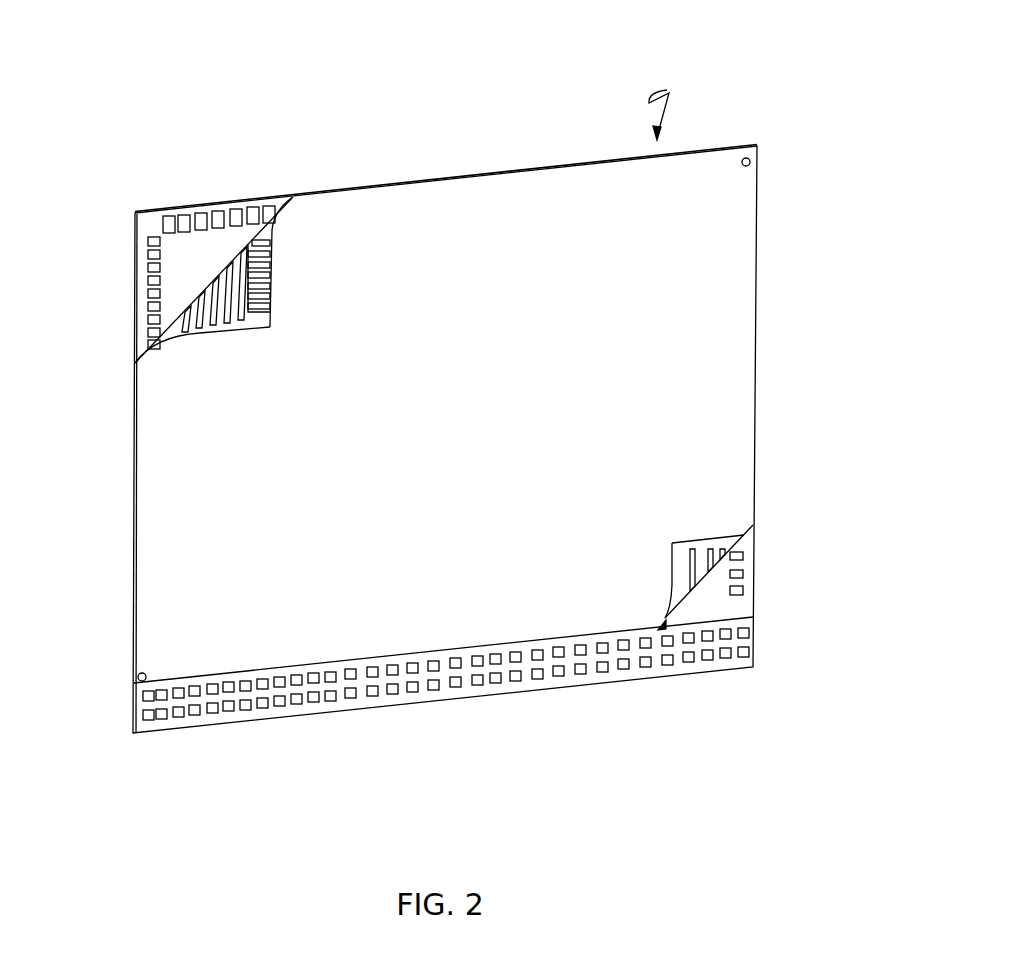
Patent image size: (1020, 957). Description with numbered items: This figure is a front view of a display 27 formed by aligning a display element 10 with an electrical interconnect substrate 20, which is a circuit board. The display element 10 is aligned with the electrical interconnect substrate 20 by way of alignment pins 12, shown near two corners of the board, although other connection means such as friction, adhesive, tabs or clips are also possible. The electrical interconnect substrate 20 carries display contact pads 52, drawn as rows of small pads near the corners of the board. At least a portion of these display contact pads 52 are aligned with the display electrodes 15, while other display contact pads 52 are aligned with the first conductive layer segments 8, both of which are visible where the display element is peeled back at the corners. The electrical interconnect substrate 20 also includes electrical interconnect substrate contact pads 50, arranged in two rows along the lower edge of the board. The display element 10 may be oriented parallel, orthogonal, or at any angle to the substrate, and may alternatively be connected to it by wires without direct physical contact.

The first conductive layer segments 8 is at (270, 293).
The display element 10 is at (472, 195).
The alignment pins 12 is at (758, 155).
The display electrodes 15 is at (214, 298).
The electrical interconnect substrate 20 is at (170, 257).
The display 27 is at (652, 95).
The electrical interconnect substrate contact pads 50 is at (180, 718).
The display contact pads 52 is at (268, 217).